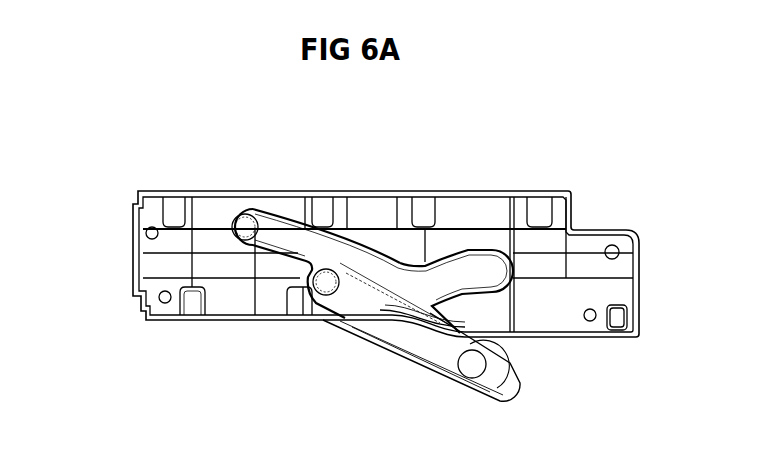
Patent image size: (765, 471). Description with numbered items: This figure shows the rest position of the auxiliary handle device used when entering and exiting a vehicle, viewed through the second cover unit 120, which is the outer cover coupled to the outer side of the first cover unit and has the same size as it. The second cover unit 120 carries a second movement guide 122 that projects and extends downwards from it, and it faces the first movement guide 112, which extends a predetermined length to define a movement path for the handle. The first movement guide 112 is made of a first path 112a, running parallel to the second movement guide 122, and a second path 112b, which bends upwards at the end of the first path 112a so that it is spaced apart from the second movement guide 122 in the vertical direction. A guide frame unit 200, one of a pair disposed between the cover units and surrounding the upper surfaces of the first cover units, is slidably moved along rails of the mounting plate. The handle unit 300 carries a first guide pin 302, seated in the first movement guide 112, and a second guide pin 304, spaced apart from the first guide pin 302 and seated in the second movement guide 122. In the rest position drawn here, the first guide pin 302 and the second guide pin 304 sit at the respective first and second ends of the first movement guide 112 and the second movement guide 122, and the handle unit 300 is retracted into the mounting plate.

The second cover unit 120 is at (148, 263).
The first movement guide 112 is at (374, 222).
The first path 112a is at (358, 258).
The second path 112b is at (469, 270).
The second movement guide 122 is at (335, 318).
The guide frame unit 200 is at (213, 302).
The handle unit 300 is at (415, 340).
The first guide pin 302 is at (244, 225).
The second guide pin 304 is at (326, 280).